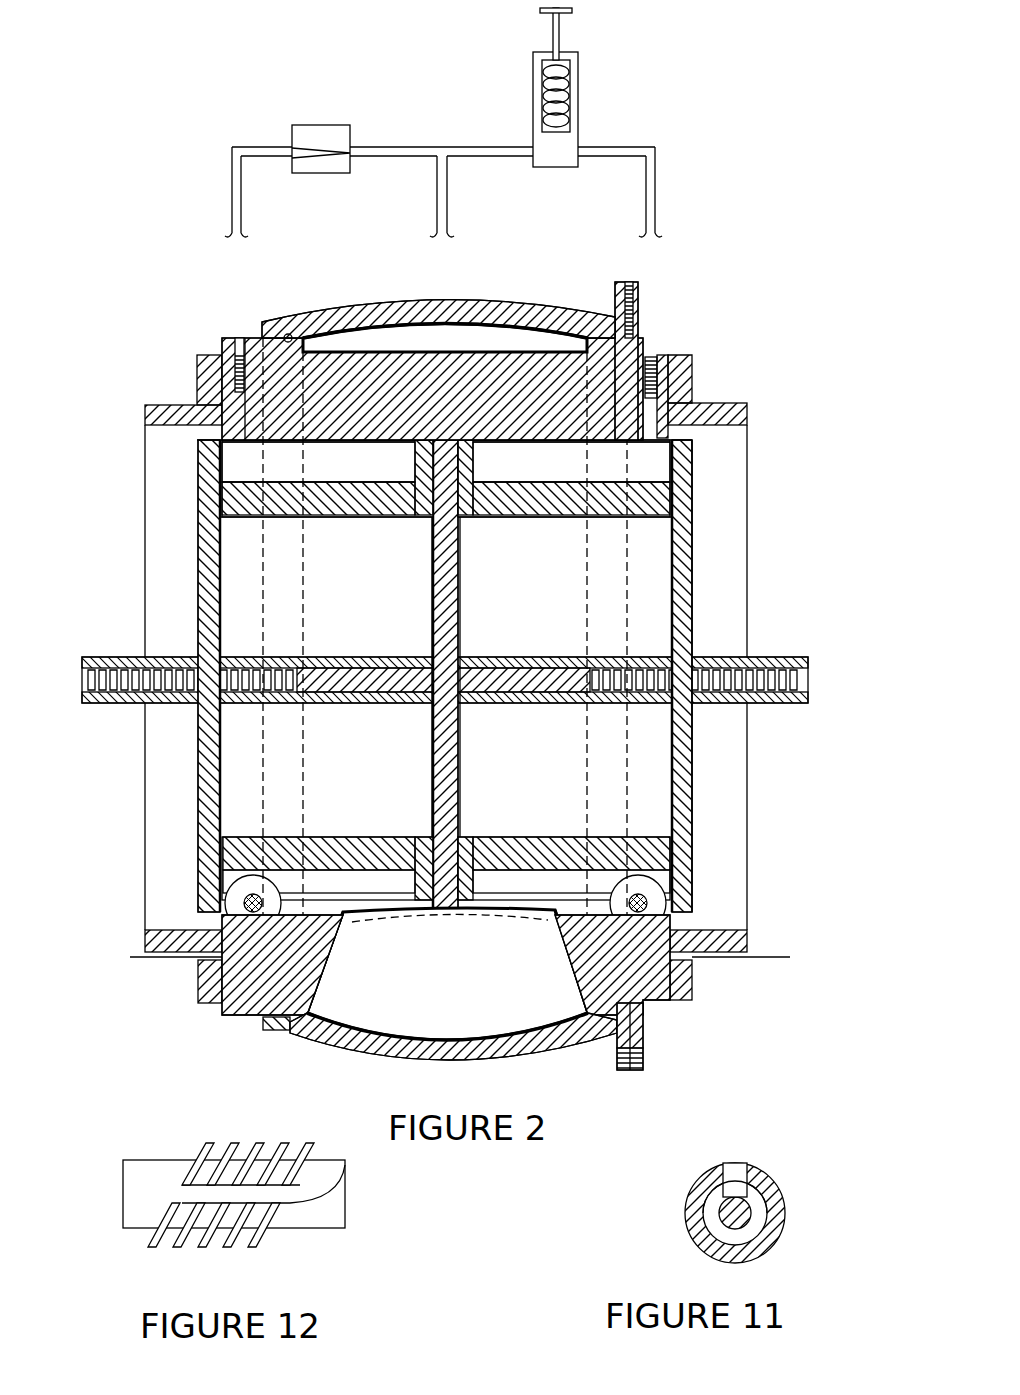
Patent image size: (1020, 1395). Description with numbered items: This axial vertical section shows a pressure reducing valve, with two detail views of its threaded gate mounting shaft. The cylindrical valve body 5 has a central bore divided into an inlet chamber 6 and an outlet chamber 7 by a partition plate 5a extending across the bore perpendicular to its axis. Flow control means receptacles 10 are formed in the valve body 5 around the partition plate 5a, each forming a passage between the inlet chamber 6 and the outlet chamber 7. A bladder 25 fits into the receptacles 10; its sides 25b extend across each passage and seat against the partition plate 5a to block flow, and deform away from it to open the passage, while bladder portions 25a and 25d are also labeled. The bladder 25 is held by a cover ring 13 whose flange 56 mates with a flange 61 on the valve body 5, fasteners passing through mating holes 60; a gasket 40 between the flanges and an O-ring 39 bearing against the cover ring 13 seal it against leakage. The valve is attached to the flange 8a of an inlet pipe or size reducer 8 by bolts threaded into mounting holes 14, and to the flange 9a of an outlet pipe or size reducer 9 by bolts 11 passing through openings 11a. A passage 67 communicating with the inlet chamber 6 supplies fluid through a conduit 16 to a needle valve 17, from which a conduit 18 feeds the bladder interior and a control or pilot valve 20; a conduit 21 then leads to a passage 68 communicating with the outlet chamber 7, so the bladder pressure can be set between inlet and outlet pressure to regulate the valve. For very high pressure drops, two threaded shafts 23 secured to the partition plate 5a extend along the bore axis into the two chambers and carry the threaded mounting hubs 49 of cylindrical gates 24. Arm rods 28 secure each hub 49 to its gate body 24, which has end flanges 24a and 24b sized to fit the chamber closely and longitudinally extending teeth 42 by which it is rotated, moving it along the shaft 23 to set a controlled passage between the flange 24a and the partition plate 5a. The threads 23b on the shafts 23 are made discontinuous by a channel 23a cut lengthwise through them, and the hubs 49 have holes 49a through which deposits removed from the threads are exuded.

In FIG. 2, the valve body 5 is at (222, 340).
In FIG. 2, the partition plate 5a is at (457, 610).
In FIG. 2, the inlet chamber 6 is at (297, 486).
In FIG. 2, the outlet chamber 7 is at (668, 464).
In FIG. 2, the inlet pipe or size reducer 8 is at (142, 421).
In FIG. 2, the flange 8a is at (200, 392).
In FIG. 2, the outlet pipe or size reducer 9 is at (750, 418).
In FIG. 2, the flange 9a is at (695, 390).
In FIG. 2, the flow control means receptacles 10 is at (197, 398).
In FIG. 2, the bolts 11 is at (446, 965).
In FIG. 2, the openings 11a is at (692, 957).
In FIG. 2, the cover ring 13 is at (343, 318).
In FIG. 2, the mounting holes 14 is at (130, 957).
In FIG. 2, the conduit 16 is at (232, 188).
In FIG. 2, the needle valve 17 is at (295, 125).
In FIG. 2, the conduit 18 is at (447, 192).
In FIG. 2, the control or pilot valve 20 is at (578, 80).
In FIG. 2, the conduit 21 is at (655, 190).
In FIG. 2, the shafts 23 is at (160, 705).
In FIG. 12, the shafts 23 is at (135, 1182).
In FIG. 12, the channel 23a is at (340, 1182).
In FIG. 11, the channel 23a is at (758, 1172).
In FIG. 12, the threads 23b is at (148, 1245).
In FIG. 11, the threads 23b is at (705, 1202).
In FIG. 2, the cylindrical gate 24 is at (396, 520).
In FIG. 2, the end flange 24a is at (390, 470).
In FIG. 2, the end flange 24b is at (200, 443).
In FIG. 2, the bladder 25 is at (372, 320).
In FIG. 2, the window side face 25a is at (422, 952).
In FIG. 2, the bladder wall 25b is at (506, 915).
In FIG. 2, the window outer surface 25d is at (435, 348).
In FIG. 2, the arm rods 28 is at (730, 604).
In FIG. 2, the O-ring 39 is at (290, 1030).
In FIG. 2, the gasket 40 is at (673, 1016).
In FIG. 2, the teeth 42 is at (228, 462).
In FIG. 2, the mounting hub 49 is at (150, 658).
In FIG. 11, the mounting hub 49 is at (692, 1240).
In FIG. 11, the holes 49a is at (733, 1170).
In FIG. 2, the flange 56 is at (617, 1040).
In FIG. 2, the mating holes 60 is at (615, 310).
In FIG. 2, the flange 61 is at (640, 288).
In FIG. 2, the passage 67 is at (240, 338).
In FIG. 2, the passage 68 is at (655, 358).